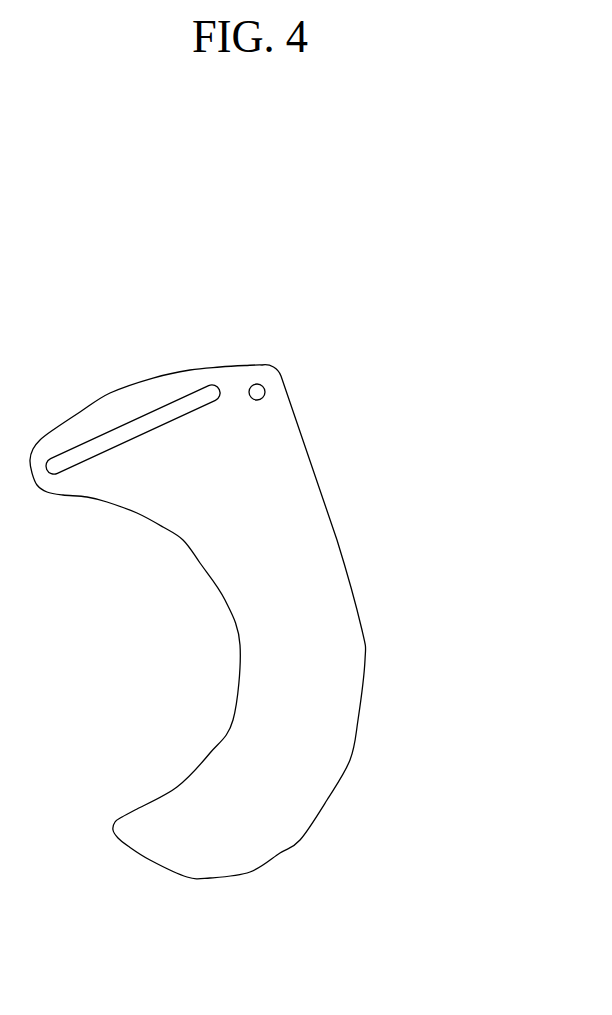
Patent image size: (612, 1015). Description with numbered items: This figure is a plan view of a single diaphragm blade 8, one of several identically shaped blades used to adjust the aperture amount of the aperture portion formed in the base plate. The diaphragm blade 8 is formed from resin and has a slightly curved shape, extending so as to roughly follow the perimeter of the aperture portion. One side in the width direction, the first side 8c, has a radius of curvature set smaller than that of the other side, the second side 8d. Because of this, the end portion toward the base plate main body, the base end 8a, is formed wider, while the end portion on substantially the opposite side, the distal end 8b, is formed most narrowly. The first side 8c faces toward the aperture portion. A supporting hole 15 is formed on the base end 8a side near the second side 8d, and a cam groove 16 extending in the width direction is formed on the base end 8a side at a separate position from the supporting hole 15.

The diaphragm blade 8 is at (384, 659).
The base end 8a is at (118, 398).
The distal end 8b is at (192, 880).
The first side 8c is at (238, 645).
The second side 8d is at (348, 570).
The supporting hole 15 is at (257, 401).
The cam groove 16 is at (110, 435).